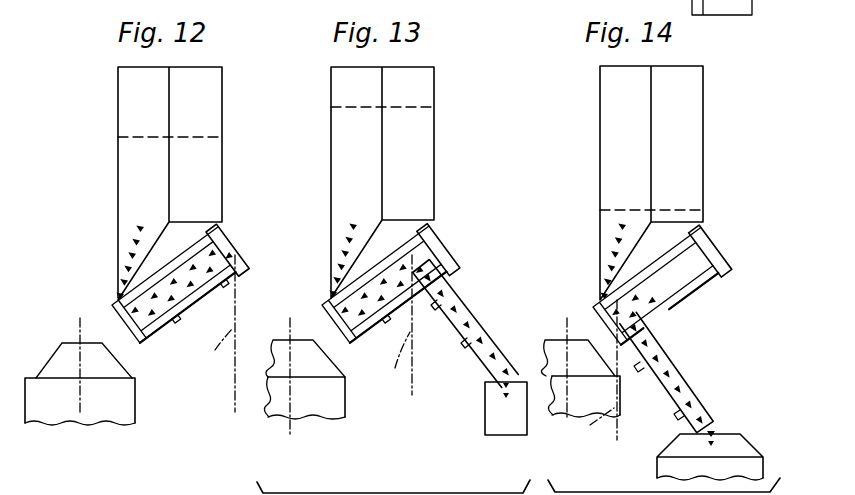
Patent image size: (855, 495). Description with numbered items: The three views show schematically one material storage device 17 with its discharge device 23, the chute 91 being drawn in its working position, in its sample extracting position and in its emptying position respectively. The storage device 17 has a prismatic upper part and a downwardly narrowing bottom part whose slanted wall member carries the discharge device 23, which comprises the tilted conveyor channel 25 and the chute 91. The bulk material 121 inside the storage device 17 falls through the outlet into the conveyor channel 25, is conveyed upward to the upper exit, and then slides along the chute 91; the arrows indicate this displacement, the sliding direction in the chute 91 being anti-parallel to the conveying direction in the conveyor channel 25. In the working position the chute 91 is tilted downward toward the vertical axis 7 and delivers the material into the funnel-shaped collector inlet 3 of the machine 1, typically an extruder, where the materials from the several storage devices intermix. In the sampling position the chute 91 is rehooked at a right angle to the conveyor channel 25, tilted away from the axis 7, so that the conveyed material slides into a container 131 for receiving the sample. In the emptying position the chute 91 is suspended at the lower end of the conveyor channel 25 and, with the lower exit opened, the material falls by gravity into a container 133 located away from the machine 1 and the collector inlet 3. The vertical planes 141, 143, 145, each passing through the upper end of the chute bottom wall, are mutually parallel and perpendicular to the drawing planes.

In FIG. 12, the machine 1 is at (135, 398).
In FIG. 13, the machine 1 is at (345, 398).
In FIG. 14, the machine 1 is at (620, 404).
In FIG. 12, the collector inlet 3 is at (92, 343).
In FIG. 13, the collector inlet 3 is at (302, 340).
In FIG. 14, the collector inlet 3 is at (577, 340).
In FIG. 12, the vertical axis 7 is at (80, 326).
In FIG. 12, the material storage device 17 is at (118, 90).
In FIG. 13, the material storage device 17 is at (331, 90).
In FIG. 14, the material storage device 17 is at (600, 90).
In FIG. 12, the discharge device 23 is at (243, 258).
In FIG. 13, the discharge device 23 is at (451, 249).
In FIG. 14, the discharge device 23 is at (713, 250).
In FIG. 12, the conveyor channel 25 is at (172, 292).
In FIG. 13, the conveyor channel 25 is at (376, 303).
In FIG. 14, the conveyor channel 25 is at (657, 282).
In FIG. 12, the chute 91 is at (227, 291).
In FIG. 13, the chute 91 is at (472, 313).
In FIG. 14, the chute 91 is at (690, 388).
In FIG. 12, the bulk material 121 is at (196, 137).
In FIG. 13, the bulk material 121 is at (411, 107).
In FIG. 14, the bulk material 121 is at (678, 210).
In FIG. 13, the container 131 is at (490, 418).
In FIG. 14, the container 133 is at (662, 472).
In FIG. 12, the vertical plane 141 is at (217, 333).
In FIG. 13, the vertical plane 143 is at (389, 325).
In FIG. 14, the vertical plane 145 is at (597, 374).